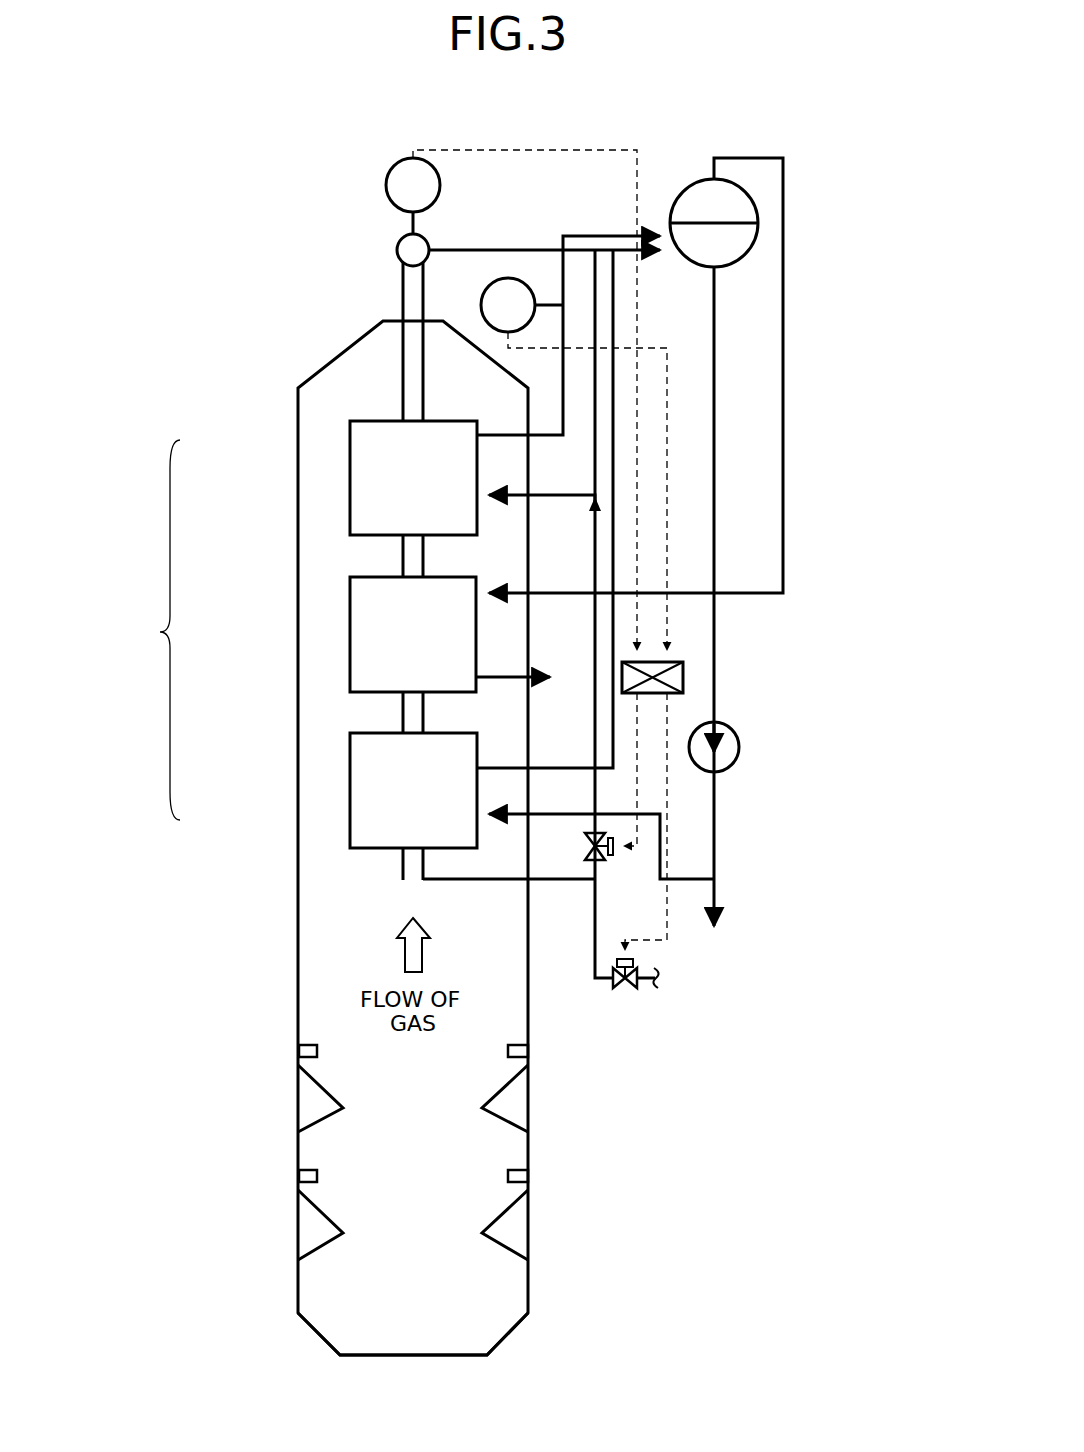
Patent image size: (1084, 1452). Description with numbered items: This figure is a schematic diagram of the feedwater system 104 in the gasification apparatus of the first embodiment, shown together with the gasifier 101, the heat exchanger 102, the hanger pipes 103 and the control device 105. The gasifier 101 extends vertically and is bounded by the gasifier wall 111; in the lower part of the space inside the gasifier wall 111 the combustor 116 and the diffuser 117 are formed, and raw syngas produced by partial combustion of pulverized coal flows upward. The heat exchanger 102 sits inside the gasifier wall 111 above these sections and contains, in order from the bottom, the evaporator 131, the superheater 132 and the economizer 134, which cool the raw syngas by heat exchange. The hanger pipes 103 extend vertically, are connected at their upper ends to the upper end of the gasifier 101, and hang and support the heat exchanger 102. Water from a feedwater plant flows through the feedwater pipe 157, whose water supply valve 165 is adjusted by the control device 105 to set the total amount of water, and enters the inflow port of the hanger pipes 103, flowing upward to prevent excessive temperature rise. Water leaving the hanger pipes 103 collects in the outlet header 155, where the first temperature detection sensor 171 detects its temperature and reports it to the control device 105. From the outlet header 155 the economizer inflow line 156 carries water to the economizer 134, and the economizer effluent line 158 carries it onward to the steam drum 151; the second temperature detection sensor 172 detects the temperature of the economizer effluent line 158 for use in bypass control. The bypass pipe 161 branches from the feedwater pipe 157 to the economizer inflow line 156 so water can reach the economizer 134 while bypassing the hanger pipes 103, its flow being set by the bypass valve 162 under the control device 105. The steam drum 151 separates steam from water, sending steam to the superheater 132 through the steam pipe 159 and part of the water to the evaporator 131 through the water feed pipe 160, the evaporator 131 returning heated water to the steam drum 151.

The gasifier 101 is at (536, 1156).
The heat exchanger 102 is at (295, 634).
The hanger pipe 103 is at (422, 863).
The feedwater system 104 is at (762, 1040).
The control device 105 is at (683, 672).
The gasifier wall 111 is at (510, 1336).
The combustor 116 is at (383, 1190).
The diffuser 117 is at (383, 1108).
The evaporator 131 is at (350, 793).
The superheater 132 is at (350, 640).
The economizer 134 is at (350, 478).
The steam drum 151 is at (713, 212).
The outlet header 155 is at (427, 240).
The economizer inflow line 156 is at (518, 248).
The feedwater pipe 157 is at (652, 986).
The economizer effluent line 158 is at (605, 233).
The steam pipe 159 is at (785, 348).
The water feed pipe 160 is at (717, 620).
The bypass pipe 161 is at (598, 785).
The bypass valve 162 is at (600, 858).
The water supply valve 165 is at (635, 950).
The first temperature detection sensor 171 is at (388, 178).
The second temperature detection sensor 172 is at (481, 305).